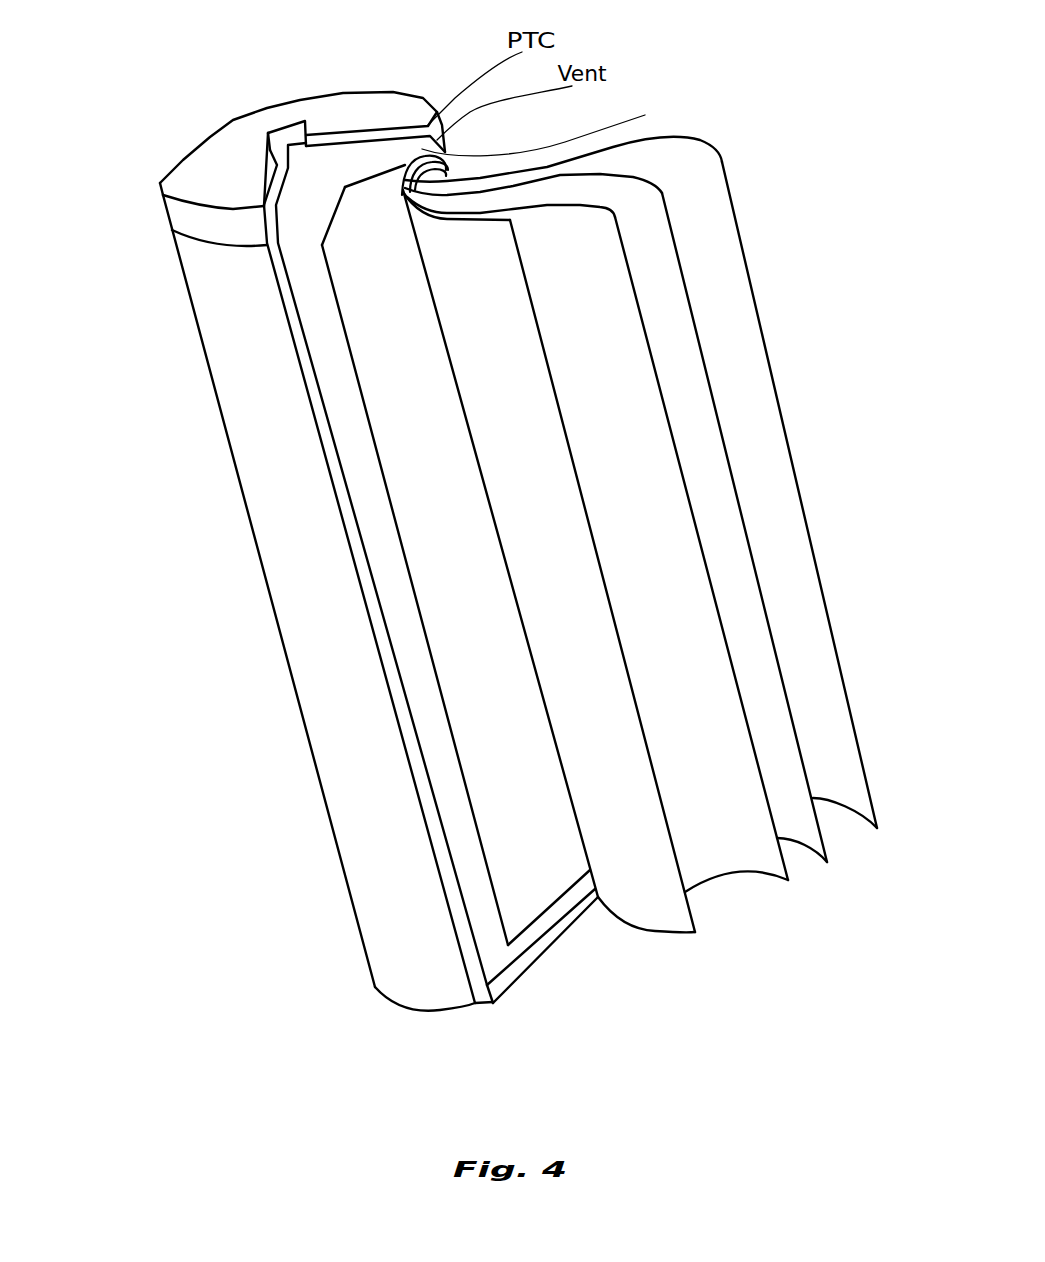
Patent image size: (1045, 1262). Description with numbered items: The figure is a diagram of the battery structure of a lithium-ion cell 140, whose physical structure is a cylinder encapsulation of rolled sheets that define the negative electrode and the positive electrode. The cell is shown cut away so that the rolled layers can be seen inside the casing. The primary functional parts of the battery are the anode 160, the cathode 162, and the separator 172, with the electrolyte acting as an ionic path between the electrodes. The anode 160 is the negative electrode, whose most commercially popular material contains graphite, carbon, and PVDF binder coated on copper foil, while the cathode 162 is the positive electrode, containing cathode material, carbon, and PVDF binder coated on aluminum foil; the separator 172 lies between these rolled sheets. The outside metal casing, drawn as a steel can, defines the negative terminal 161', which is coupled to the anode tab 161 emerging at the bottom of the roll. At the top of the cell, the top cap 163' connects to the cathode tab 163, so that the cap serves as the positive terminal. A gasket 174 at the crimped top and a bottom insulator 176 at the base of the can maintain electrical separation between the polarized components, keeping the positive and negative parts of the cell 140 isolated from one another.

The top cap 163' is at (261, 110).
The gasket 174 is at (400, 118).
The cathode tab 163 is at (603, 108).
The cell 140 is at (290, 192).
The negative terminal 161' is at (271, 573).
The bottom insulator 176 is at (487, 983).
The anode tab 161 is at (547, 991).
The cathode 162 is at (655, 921).
The separator 172 is at (683, 614).
The anode 160 is at (718, 412).